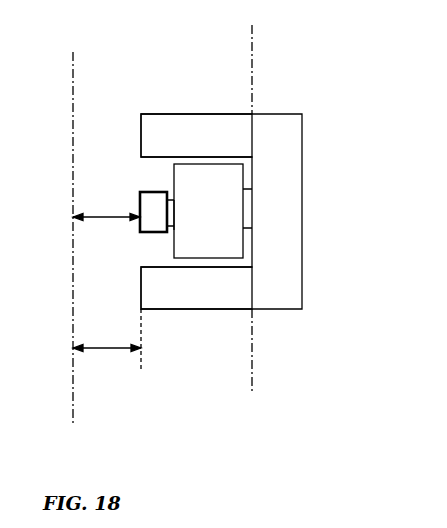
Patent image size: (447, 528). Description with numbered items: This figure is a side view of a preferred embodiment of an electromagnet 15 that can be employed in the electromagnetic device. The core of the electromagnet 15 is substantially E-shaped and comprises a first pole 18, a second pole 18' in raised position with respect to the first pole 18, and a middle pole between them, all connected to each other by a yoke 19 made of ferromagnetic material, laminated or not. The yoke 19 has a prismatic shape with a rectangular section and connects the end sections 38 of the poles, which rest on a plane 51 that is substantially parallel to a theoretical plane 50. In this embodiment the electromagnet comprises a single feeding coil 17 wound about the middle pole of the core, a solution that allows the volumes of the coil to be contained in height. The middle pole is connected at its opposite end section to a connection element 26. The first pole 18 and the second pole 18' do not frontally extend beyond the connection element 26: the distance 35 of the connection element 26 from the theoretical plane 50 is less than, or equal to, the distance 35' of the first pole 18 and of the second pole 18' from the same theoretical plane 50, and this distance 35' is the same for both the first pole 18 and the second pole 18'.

The electromagnet 15 is at (272, 207).
The feeding coil 17 is at (245, 240).
The first pole 18 is at (196, 111).
The second pole 18' is at (265, 282).
The yoke 19 is at (278, 130).
The connection element 26 is at (152, 216).
The distance 35 is at (85, 184).
The distance 35' is at (85, 316).
The end section 38 is at (244, 232).
The theoretical plane 50 is at (77, 100).
The plane 51 is at (262, 368).